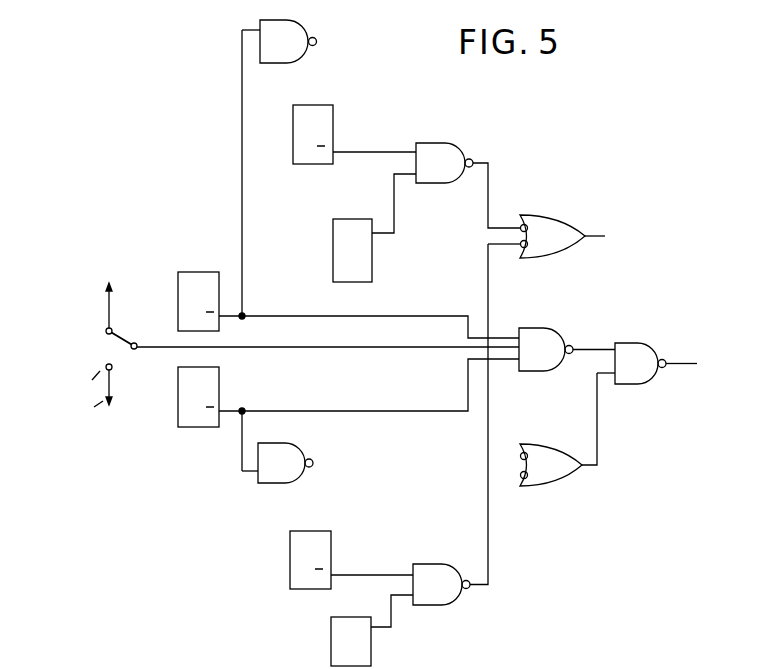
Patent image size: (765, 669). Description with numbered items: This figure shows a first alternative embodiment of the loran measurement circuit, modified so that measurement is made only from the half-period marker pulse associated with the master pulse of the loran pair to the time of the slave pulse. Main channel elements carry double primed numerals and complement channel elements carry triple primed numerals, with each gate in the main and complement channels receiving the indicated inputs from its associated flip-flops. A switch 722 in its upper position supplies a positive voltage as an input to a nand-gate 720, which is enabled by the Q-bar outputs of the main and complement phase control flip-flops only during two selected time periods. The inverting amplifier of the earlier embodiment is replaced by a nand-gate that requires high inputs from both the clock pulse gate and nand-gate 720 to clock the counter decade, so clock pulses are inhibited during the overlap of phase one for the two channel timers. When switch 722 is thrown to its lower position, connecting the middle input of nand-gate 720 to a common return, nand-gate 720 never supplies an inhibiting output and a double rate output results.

The switch 722 is at (118, 352).
The nand-gate 720 is at (555, 328).